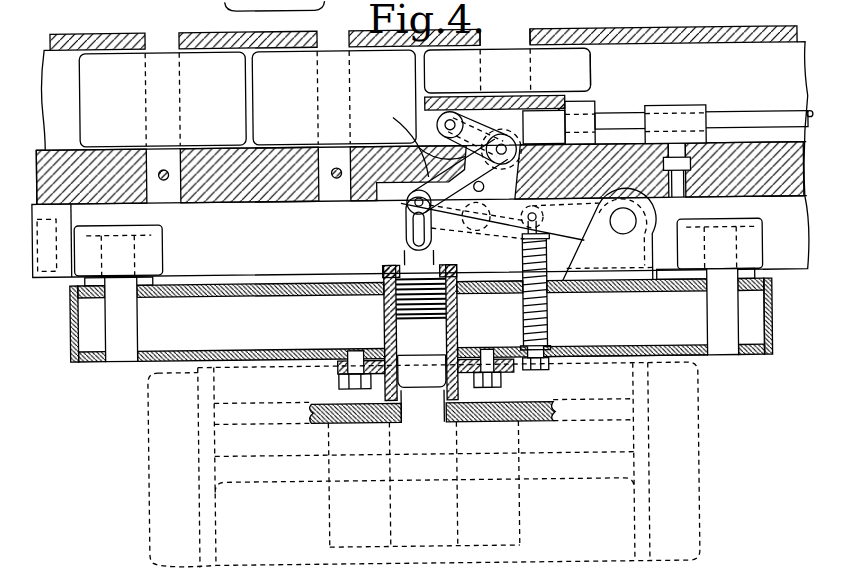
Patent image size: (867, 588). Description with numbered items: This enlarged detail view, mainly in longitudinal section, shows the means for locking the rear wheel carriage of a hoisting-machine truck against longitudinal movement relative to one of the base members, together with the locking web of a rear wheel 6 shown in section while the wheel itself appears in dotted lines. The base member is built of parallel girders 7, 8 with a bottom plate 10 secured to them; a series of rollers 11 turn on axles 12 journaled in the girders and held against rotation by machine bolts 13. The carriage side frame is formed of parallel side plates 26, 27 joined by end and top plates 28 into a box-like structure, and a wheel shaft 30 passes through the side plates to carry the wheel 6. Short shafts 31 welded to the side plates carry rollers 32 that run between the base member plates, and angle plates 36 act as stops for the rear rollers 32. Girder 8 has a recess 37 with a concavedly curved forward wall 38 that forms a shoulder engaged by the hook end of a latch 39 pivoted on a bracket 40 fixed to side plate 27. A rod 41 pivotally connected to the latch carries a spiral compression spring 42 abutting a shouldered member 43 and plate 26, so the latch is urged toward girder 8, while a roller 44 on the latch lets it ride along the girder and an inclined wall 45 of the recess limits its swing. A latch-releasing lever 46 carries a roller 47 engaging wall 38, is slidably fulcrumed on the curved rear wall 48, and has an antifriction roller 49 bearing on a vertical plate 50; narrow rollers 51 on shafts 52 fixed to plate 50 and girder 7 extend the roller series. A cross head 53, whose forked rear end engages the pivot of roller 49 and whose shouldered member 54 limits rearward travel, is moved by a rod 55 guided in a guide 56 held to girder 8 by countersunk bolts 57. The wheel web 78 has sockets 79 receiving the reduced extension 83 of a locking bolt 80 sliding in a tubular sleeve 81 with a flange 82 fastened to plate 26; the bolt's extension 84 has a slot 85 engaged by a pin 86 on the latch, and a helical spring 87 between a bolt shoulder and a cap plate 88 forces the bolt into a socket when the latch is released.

The rear wheel 6 is at (697, 483).
The girder 7 is at (750, 37).
The girder 8 is at (278, 133).
The bottom plate 10 is at (278, 263).
The roller 11 is at (220, 128).
The axle 12 is at (158, 35).
The machine bolt 13 is at (167, 177).
The side plate 26 is at (674, 351).
The side plate 27 is at (652, 294).
The end and top plate 28 is at (774, 334).
The wheel shaft 30 is at (395, 505).
The short shaft 31 is at (122, 355).
The roller 32 is at (163, 247).
The angle plate 36 is at (67, 261).
The recess 37 is at (544, 126).
The concavedly curved wall 38 is at (492, 221).
The latch 39 is at (484, 198).
The bracket 40 is at (648, 229).
The rod 41 is at (556, 348).
The spiral compression spring 42 is at (548, 301).
The shouldered member 43 is at (527, 233).
The roller 44 is at (472, 195).
The inclined wall 45 is at (418, 190).
The latch-releasing lever 46 is at (478, 140).
The roller 47 is at (512, 133).
The curved rear wall 48 is at (435, 148).
The antifriction roller 49 is at (425, 117).
The plate 50 is at (447, 97).
The roller 51 is at (590, 67).
The shaft 52 is at (505, 43).
The cross head 53 is at (567, 115).
The shouldered member 54 is at (580, 124).
The rod 55 is at (765, 116).
The guide 56 is at (705, 113).
The countersunk bolt 57 is at (688, 195).
The web 78 is at (548, 420).
The socket 79 is at (430, 410).
The locking bolt 80 is at (440, 328).
The tubular sleeve 81 is at (387, 326).
The flange 82 is at (337, 366).
The reduced extension 83 is at (393, 380).
The extension 84 is at (403, 250).
The longitudinal slot 85 is at (408, 223).
The pin 86 is at (413, 203).
The helical spring 87 is at (396, 305).
The cap plate 88 is at (385, 268).